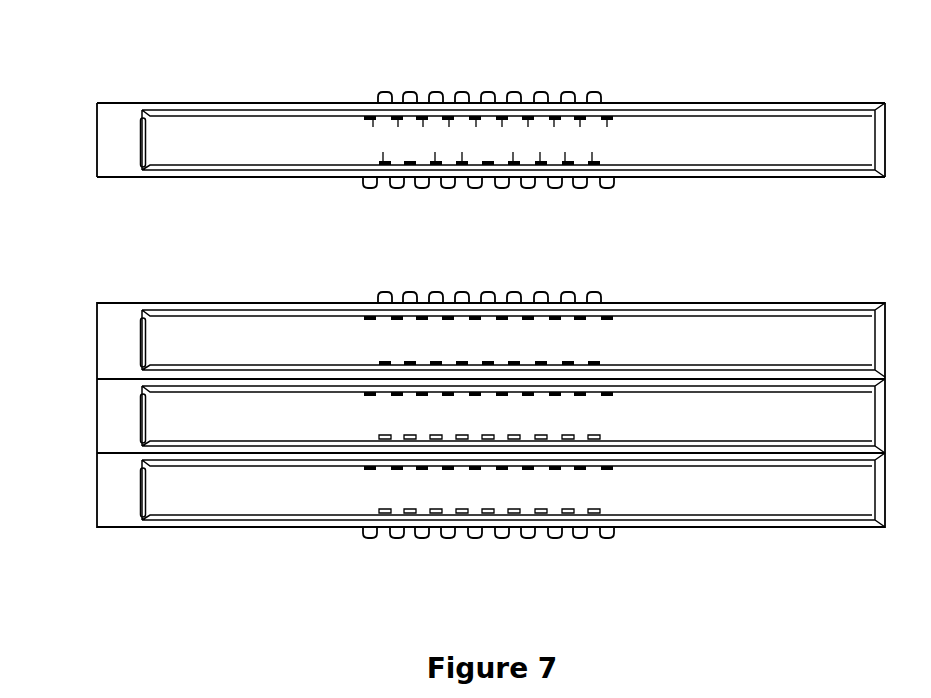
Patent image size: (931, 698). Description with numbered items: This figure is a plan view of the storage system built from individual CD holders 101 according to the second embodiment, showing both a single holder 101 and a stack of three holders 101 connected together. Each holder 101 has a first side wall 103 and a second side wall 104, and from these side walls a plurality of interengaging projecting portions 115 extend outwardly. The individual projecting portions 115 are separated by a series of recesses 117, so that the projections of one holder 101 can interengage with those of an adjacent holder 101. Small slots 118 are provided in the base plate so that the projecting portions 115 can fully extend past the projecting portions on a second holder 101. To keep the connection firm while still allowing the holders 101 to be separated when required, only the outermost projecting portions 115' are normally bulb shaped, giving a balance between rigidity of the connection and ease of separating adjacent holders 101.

The CD holder 101 is at (177, 303).
The first side wall 103 is at (253, 103).
The second side wall 104 is at (253, 177).
The projecting portions 115 is at (518, 320).
The outermost projecting portions 115' is at (570, 314).
The recesses 117 is at (580, 100).
The small slots 118 is at (489, 140).